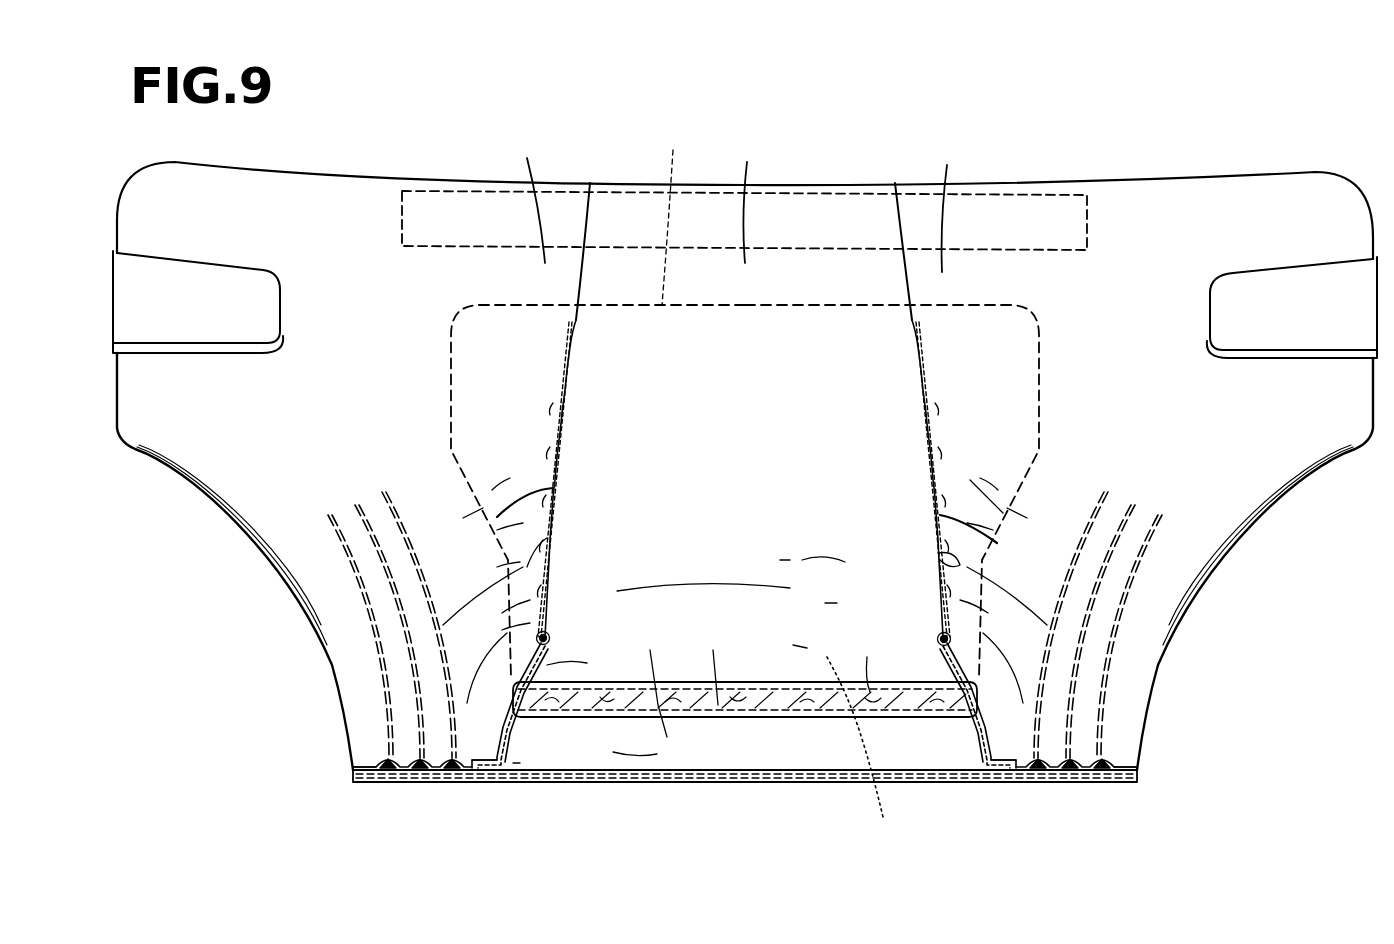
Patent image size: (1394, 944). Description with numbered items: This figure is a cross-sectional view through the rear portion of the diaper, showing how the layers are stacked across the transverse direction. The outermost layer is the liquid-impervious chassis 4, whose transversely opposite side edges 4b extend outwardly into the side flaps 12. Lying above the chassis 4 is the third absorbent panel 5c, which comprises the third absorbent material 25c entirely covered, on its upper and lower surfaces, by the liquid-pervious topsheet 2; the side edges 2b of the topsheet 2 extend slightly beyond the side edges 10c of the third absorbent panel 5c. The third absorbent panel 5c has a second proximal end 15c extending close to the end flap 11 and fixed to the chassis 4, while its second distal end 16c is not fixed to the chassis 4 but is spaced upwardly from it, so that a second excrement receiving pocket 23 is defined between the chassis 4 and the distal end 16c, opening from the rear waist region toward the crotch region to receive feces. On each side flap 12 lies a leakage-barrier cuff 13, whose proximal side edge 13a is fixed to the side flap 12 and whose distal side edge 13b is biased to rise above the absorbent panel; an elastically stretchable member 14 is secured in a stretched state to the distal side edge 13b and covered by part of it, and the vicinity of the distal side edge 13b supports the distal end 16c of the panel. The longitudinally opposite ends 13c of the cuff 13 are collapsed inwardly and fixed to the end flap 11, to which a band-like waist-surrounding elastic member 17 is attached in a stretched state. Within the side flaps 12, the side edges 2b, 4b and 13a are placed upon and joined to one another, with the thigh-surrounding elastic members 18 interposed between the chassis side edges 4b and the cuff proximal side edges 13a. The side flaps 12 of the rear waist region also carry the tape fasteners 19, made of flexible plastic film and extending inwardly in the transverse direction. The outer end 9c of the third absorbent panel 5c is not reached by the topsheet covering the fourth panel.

The topsheet 2 is at (775, 682).
The side edges of the topsheet 2b is at (483, 772).
The chassis 4 is at (768, 786).
The side edges of the chassis 4b is at (375, 775).
The third absorbent panel 5c is at (869, 661).
The outer end of the third absorbent panel 9c is at (680, 215).
The side edges of the third absorbent panel 10c is at (520, 713).
The end flap 11 is at (758, 200).
The side flap 12 is at (383, 578).
The leakage-barrier cuff 13 is at (553, 488).
The proximal side edge of the leakage-barrier cuff 13a is at (373, 765).
The distal side edge of the leakage-barrier cuff 13b is at (547, 538).
The longitudinally opposite ends of the leakage-barrier cuff 13c is at (735, 199).
The elastically stretchable member 14 is at (553, 633).
The second proximal end 15c is at (733, 330).
The second distal end 16c is at (875, 755).
The waist-surrounding elastic member 17 is at (828, 213).
The thigh-surrounding elastic members 18 is at (390, 772).
The tape fastener 19 is at (247, 303).
The second excrement receiving pocket 23 is at (652, 681).
The third absorbent material 25c is at (709, 665).